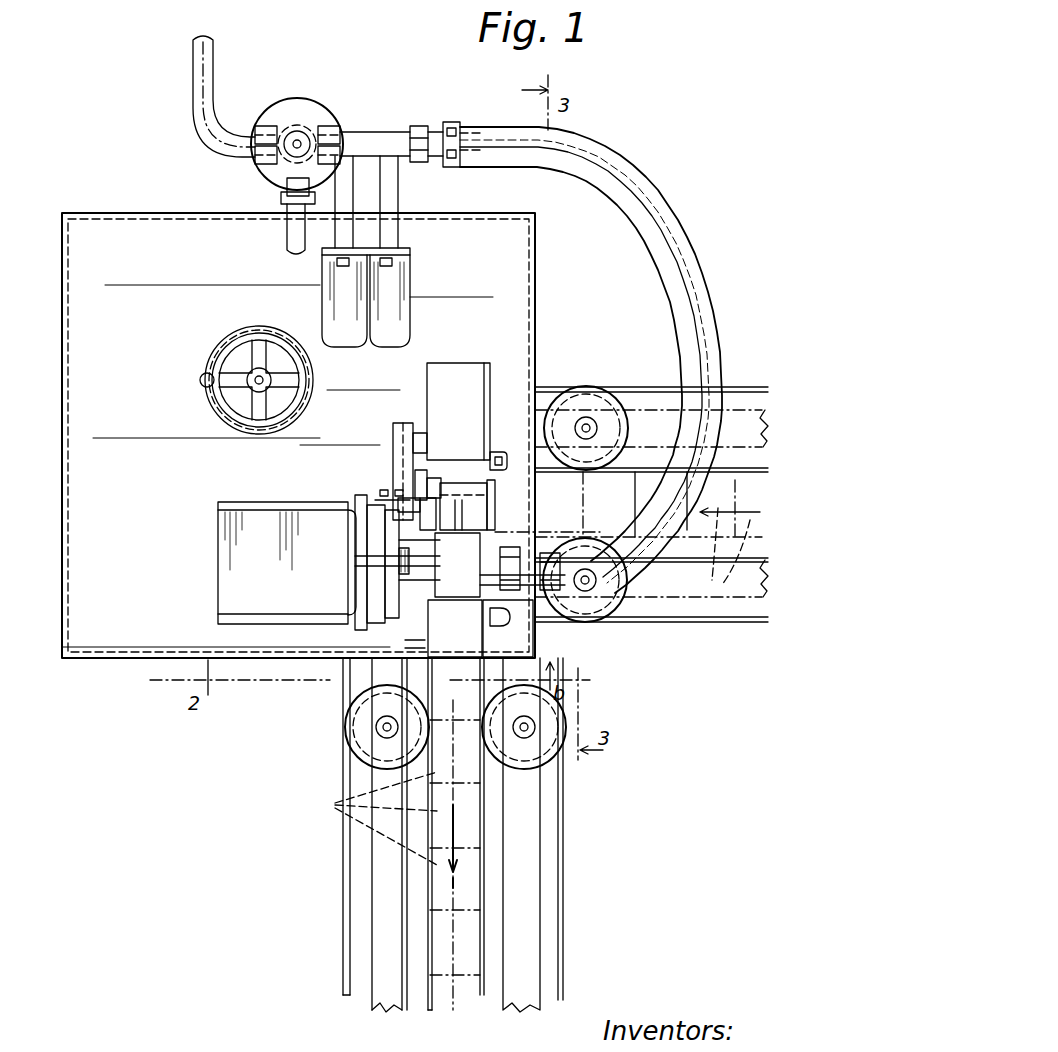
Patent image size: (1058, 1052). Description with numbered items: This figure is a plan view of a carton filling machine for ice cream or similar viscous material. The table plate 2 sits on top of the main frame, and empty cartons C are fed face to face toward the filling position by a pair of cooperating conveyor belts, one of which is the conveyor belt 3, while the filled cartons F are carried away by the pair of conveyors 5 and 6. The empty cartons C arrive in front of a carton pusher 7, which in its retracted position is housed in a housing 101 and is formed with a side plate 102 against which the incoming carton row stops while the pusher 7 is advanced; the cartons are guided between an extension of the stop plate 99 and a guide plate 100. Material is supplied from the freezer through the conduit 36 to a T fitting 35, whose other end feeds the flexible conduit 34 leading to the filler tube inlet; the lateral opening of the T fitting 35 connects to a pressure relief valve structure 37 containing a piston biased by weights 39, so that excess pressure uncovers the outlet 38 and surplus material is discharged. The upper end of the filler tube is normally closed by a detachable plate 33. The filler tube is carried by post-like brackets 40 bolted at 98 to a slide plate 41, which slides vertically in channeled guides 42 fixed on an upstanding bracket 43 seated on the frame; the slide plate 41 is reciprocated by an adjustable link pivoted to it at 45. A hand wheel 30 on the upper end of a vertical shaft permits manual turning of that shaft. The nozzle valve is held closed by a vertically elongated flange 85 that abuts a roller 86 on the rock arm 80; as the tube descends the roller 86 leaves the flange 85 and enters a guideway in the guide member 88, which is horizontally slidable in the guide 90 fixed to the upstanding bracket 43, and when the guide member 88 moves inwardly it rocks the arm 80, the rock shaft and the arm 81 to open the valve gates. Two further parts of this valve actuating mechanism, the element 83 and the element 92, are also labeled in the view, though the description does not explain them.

The table plate 2 is at (525, 315).
The conveyor belt 3 is at (740, 392).
The conveyor 5 is at (425, 995).
The conveyor 6 is at (480, 985).
The carton pusher 7 is at (547, 529).
The hand wheel 30 is at (225, 336).
The plate 33 is at (460, 590).
The flexible conduit 34 is at (660, 196).
The T fitting 35 is at (310, 138).
The conduit 36 is at (193, 104).
The pressure relief valve structure 37 is at (300, 128).
The outlet 38 is at (292, 228).
The weights 39 is at (292, 98).
The brackets 40 is at (380, 535).
The slide plate 41 is at (388, 558).
The channeled guides 42 is at (375, 525).
The upstanding bracket 43 is at (360, 622).
The pivot 45 is at (385, 572).
The rock arm 80 is at (440, 497).
The arm 81 is at (506, 460).
The cylinder 83 is at (490, 518).
The vertically elongated flange 85 is at (398, 500).
The roller 86 is at (437, 482).
The guide member 88 is at (430, 470).
The horizontally extending guide 90 is at (405, 420).
The spring 92 is at (419, 433).
The bolts 98 is at (385, 545).
The stop plate 99 is at (362, 498).
The guide plate 100 is at (482, 648).
The housing 101 is at (485, 372).
The side plate 102 is at (486, 500).
The direction arrow a is at (700, 622).
The empty cartons C is at (725, 548).
The filled cartons F is at (345, 805).